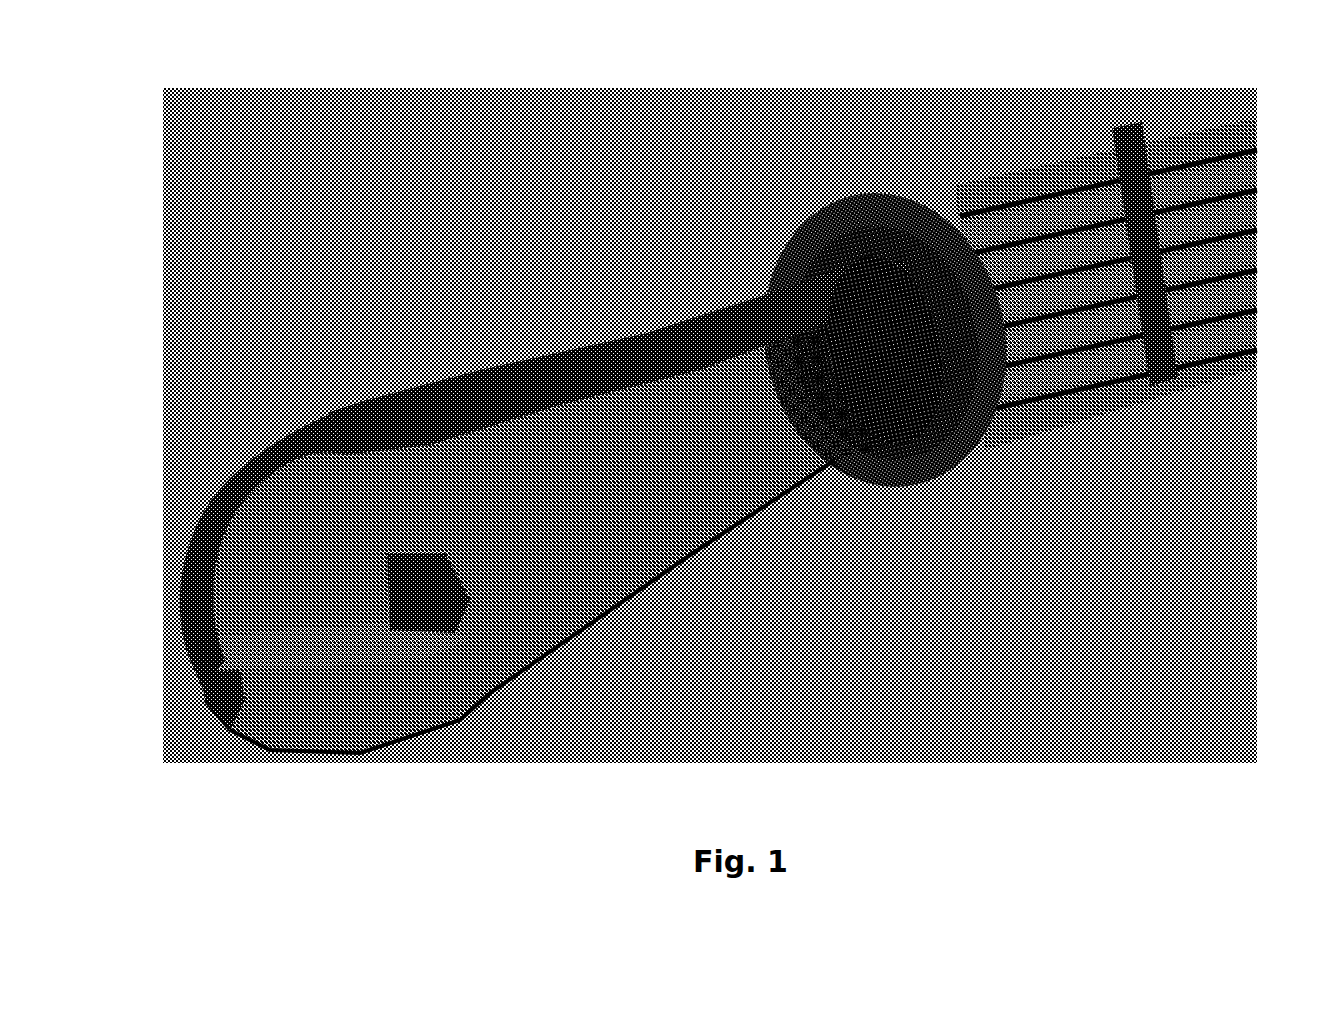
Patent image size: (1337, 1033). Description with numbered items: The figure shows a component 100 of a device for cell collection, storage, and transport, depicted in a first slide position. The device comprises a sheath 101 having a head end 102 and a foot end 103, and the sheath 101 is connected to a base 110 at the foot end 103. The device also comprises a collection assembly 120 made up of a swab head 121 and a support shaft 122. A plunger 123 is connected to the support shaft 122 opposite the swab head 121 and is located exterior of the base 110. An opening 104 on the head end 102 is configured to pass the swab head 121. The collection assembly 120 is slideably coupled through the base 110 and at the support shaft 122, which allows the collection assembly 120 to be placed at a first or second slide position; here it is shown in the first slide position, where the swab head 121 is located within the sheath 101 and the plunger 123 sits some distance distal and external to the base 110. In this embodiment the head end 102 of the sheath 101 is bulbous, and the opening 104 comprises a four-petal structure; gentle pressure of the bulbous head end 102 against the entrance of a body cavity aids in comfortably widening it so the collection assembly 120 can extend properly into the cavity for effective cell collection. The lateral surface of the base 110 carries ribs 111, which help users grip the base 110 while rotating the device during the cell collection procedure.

The component 100 is at (710, 413).
The sheath 101 is at (460, 380).
The head end 102 is at (230, 465).
The foot end 103 is at (885, 483).
The opening 104 is at (197, 678).
The base 110 is at (1085, 415).
The ribs 111 is at (1125, 312).
The collection assembly 120 is at (650, 473).
The swab head 121 is at (388, 650).
The support shaft 122 is at (565, 495).
The plunger 123 is at (1150, 148).